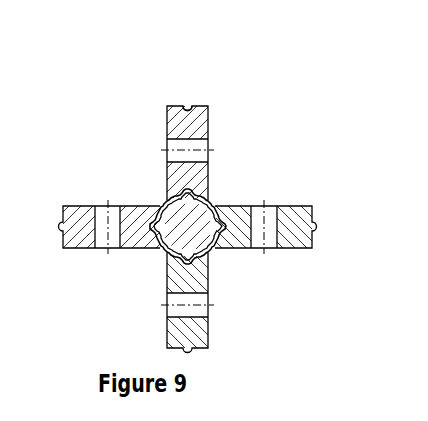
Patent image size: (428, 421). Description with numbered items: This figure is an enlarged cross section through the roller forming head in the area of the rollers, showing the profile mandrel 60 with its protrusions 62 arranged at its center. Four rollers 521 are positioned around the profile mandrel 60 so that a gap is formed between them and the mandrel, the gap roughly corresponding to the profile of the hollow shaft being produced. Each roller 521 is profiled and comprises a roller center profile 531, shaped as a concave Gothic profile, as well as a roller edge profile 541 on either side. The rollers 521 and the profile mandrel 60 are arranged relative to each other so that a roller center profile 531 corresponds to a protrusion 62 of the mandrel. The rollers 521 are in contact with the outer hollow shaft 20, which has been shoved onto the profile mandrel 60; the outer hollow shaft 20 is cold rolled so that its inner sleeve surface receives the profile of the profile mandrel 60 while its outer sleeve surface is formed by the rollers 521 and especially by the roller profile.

The outer hollow shaft 20 is at (178, 196).
The profile mandrel 60 is at (215, 257).
The protrusions 62 is at (166, 197).
The rollers 521 is at (166, 113).
The roller center profile 531 is at (185, 104).
The roller edge profile 541 is at (167, 103).